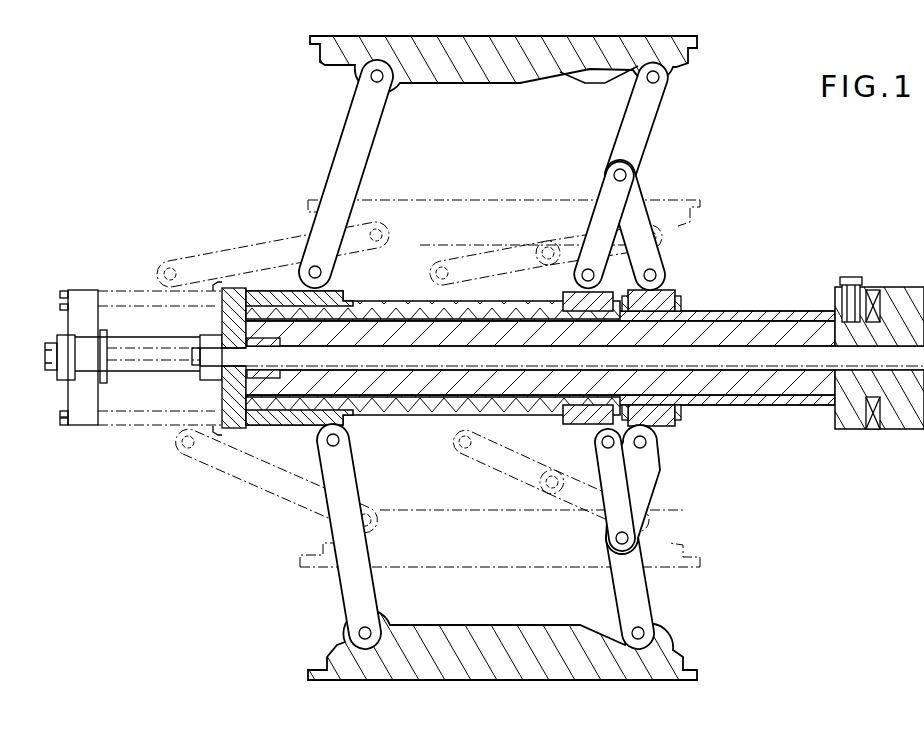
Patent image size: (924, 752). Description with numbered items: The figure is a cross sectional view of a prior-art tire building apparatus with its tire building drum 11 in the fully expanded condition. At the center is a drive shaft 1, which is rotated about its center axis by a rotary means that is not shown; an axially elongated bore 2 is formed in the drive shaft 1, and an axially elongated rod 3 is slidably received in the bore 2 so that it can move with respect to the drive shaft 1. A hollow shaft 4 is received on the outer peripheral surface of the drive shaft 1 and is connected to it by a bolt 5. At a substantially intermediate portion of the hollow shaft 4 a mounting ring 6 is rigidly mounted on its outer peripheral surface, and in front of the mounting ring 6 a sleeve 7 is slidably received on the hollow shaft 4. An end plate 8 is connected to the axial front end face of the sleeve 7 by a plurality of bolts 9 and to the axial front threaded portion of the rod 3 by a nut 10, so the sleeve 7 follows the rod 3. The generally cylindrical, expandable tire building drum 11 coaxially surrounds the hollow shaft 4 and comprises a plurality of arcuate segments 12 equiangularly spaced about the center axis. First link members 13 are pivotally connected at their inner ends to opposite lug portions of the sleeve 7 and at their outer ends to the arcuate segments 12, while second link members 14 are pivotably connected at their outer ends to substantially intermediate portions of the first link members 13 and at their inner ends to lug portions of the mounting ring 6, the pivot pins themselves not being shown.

The drive shaft 1 is at (908, 290).
The bore 2 is at (850, 348).
The rod 3 is at (585, 358).
The hollow shaft 4 is at (776, 312).
The bolt 5 is at (850, 281).
The mounting ring 6 is at (672, 292).
The sleeve 7 is at (380, 302).
The end plate 8 is at (222, 326).
The bolts 9 is at (222, 285).
The nut 10 is at (205, 378).
The tire building drum 11 is at (716, 54).
The arcuate segments 12 is at (584, 45).
The first link members 13 is at (376, 126).
The second link members 14 is at (640, 190).